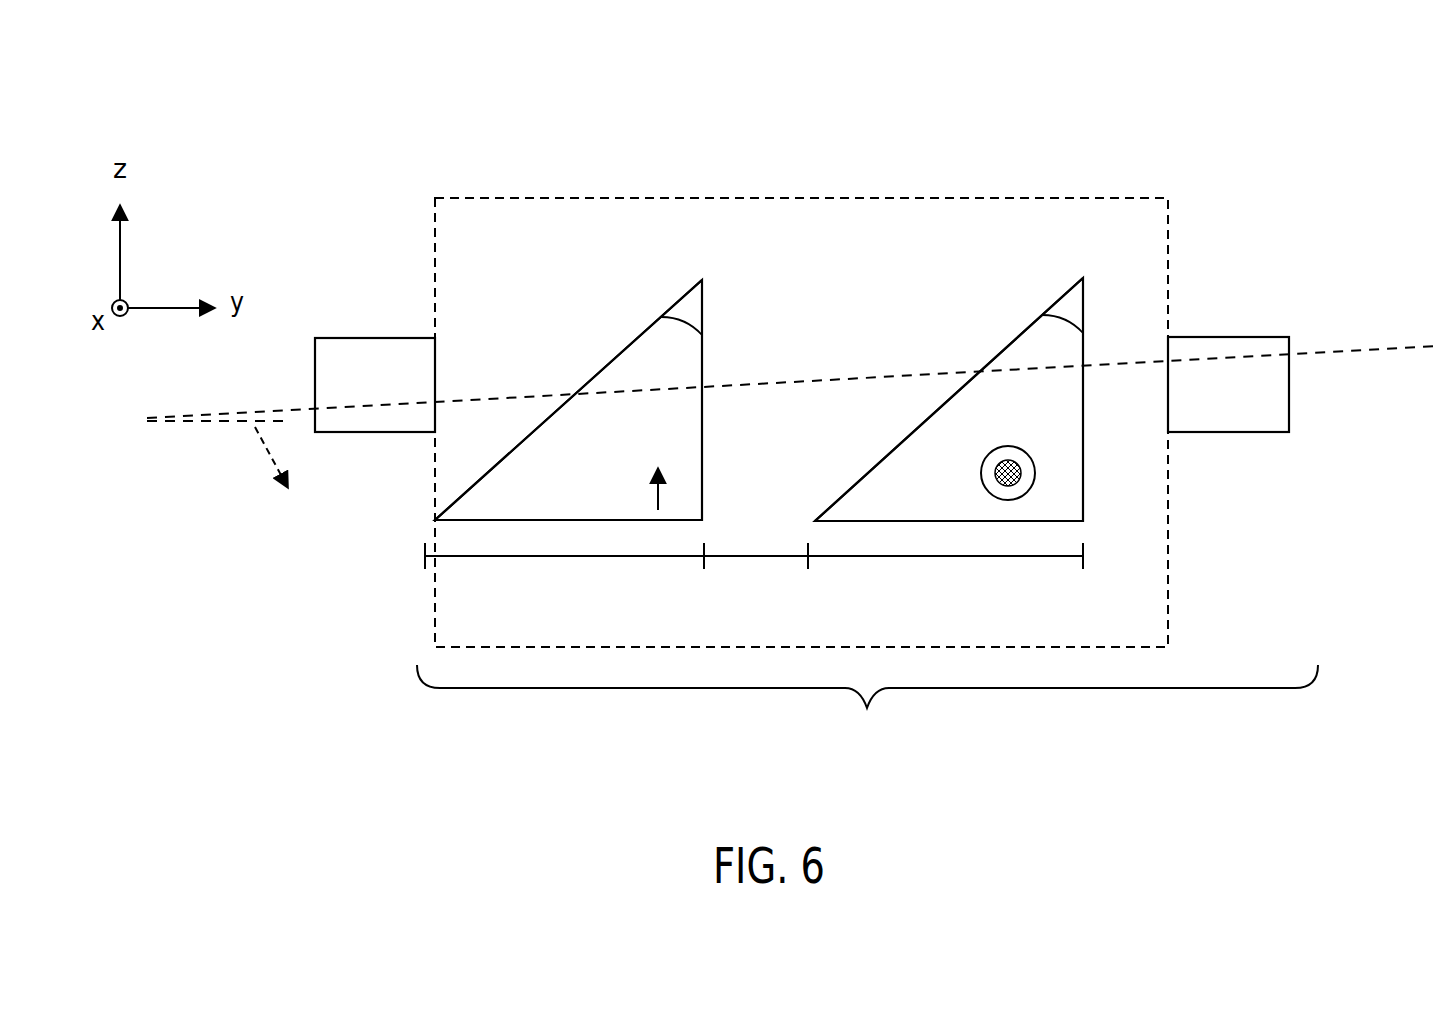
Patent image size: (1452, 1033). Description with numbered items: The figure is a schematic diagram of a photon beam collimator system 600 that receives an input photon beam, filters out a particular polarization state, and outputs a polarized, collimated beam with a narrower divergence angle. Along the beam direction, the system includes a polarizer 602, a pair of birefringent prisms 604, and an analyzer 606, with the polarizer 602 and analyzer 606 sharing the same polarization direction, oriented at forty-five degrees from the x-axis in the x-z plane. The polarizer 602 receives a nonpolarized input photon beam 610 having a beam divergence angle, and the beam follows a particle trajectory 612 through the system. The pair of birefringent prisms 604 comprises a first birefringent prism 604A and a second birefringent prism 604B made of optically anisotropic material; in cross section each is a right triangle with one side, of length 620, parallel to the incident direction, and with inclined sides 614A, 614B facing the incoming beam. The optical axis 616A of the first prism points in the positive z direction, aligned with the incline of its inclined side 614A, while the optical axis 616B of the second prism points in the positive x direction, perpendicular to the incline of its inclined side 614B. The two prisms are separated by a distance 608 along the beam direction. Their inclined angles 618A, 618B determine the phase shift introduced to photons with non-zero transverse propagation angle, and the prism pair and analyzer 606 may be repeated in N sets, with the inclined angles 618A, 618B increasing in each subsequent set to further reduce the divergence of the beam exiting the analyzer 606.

The photon beam collimator system 600 is at (388, 120).
The polarizer 602 is at (375, 336).
The pair of birefringent prisms 604 is at (757, 197).
The first birefringent prism 604A is at (612, 281).
The second birefringent prism 604B is at (1034, 281).
The analyzer 606 is at (1240, 336).
The distance 608 is at (750, 590).
The input photon beam 610 is at (214, 423).
The particle trajectory 612 is at (1386, 351).
The inclined side of first birefringent prism 614A is at (632, 344).
The inclined side of second birefringent prism 614B is at (1012, 343).
The optical axis of first birefringent prism 616A is at (583, 513).
The optical axis of second birefringent prism 616B is at (948, 513).
The inclined angle of first birefringent prism 618A is at (690, 311).
The inclined angle of second birefringent prism 618B is at (1072, 311).
The length 620 is at (548, 590).